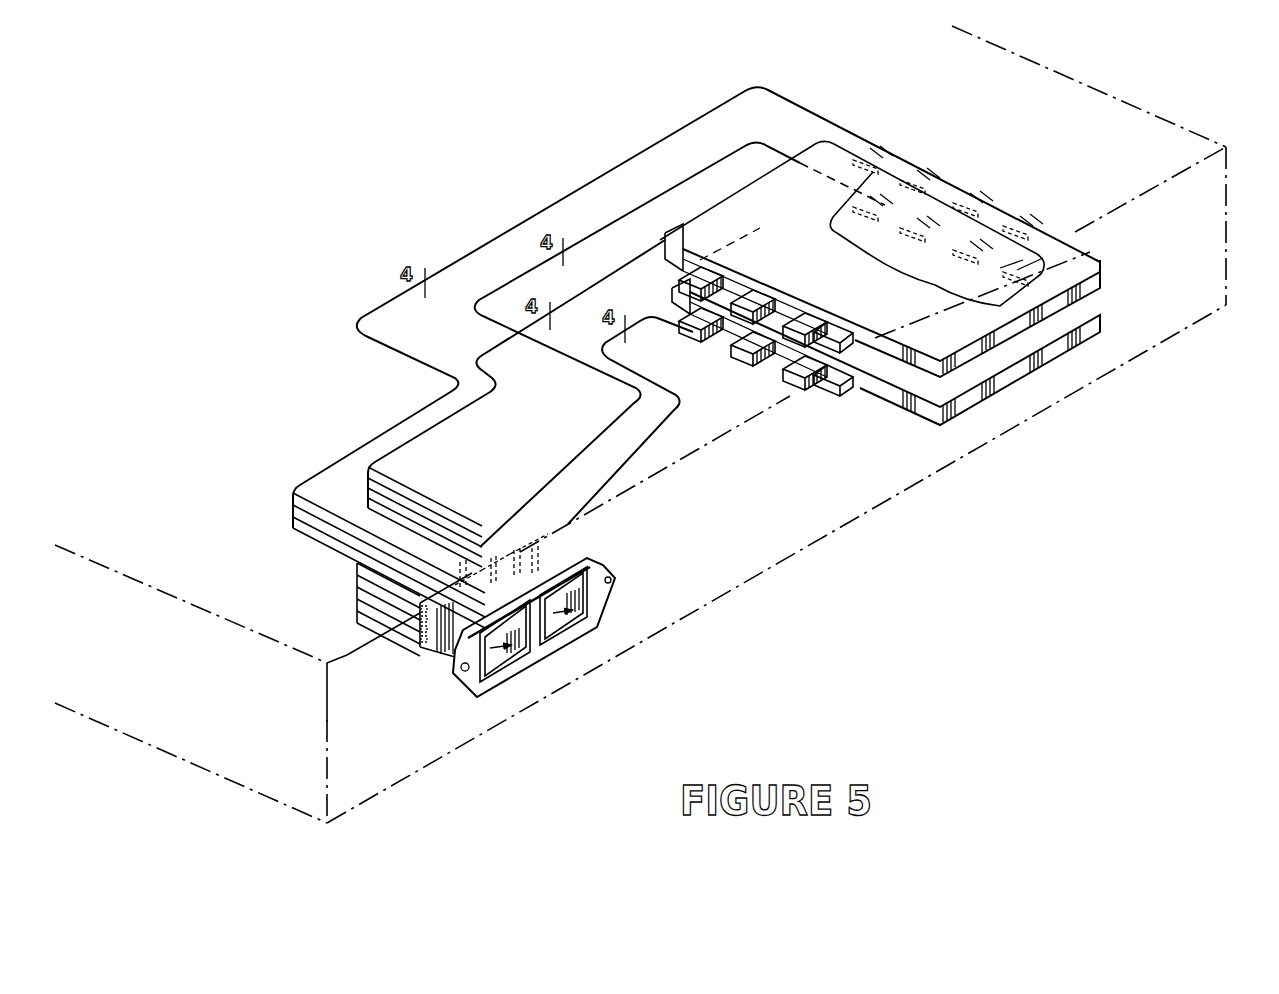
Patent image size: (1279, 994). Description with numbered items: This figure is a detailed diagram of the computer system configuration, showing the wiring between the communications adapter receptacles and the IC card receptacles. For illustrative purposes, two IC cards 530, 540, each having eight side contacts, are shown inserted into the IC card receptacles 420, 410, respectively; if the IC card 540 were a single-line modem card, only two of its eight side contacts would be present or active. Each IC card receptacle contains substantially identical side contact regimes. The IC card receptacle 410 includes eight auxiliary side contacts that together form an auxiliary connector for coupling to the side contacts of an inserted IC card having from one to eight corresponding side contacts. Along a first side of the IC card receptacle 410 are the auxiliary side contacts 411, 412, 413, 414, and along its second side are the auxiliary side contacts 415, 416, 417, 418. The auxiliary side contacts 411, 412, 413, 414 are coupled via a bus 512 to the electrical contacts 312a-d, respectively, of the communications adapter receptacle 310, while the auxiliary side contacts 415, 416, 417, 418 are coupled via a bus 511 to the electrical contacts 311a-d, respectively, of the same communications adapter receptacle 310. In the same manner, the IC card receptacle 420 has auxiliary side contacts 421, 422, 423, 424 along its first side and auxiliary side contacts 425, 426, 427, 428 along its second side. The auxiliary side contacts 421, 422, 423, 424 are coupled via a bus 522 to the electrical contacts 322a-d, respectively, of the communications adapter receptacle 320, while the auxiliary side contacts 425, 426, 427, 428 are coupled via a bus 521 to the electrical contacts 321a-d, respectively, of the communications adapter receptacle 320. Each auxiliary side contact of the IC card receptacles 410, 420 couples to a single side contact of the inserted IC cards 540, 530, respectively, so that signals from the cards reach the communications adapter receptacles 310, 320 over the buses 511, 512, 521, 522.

The communications adapter receptacle 310 is at (507, 655).
The communications adapter receptacle 320 is at (568, 623).
The electrical contacts 311a-d is at (425, 604).
The electrical contacts 312a-d is at (462, 575).
The electrical contacts 321a-d is at (492, 563).
The electrical contacts 322a-d is at (532, 547).
The IC card receptacle 410 is at (944, 432).
The IC card receptacle 420 is at (1108, 259).
The auxiliary side contact 411 is at (840, 395).
The auxiliary side contact 412 is at (798, 372).
The auxiliary side contact 413 is at (745, 348).
The auxiliary side contact 414 is at (695, 322).
The auxiliary side contact 415 is at (875, 221).
The auxiliary side contact 416 is at (920, 244).
The auxiliary side contact 417 is at (970, 266).
The auxiliary side contact 418 is at (1024, 285).
The auxiliary side contact 421 is at (832, 318).
The auxiliary side contact 422 is at (790, 299).
The auxiliary side contact 423 is at (735, 272).
The auxiliary side contact 424 is at (687, 253).
The auxiliary side contact 425 is at (888, 158).
The auxiliary side contact 426 is at (934, 174).
The auxiliary side contact 427 is at (987, 198).
The auxiliary side contact 428 is at (1037, 218).
The bus 511 is at (352, 564).
The bus 512 is at (528, 490).
The bus 521 is at (355, 445).
The bus 522 is at (460, 418).
The IC card 530 is at (805, 238).
The IC card 540 is at (902, 377).